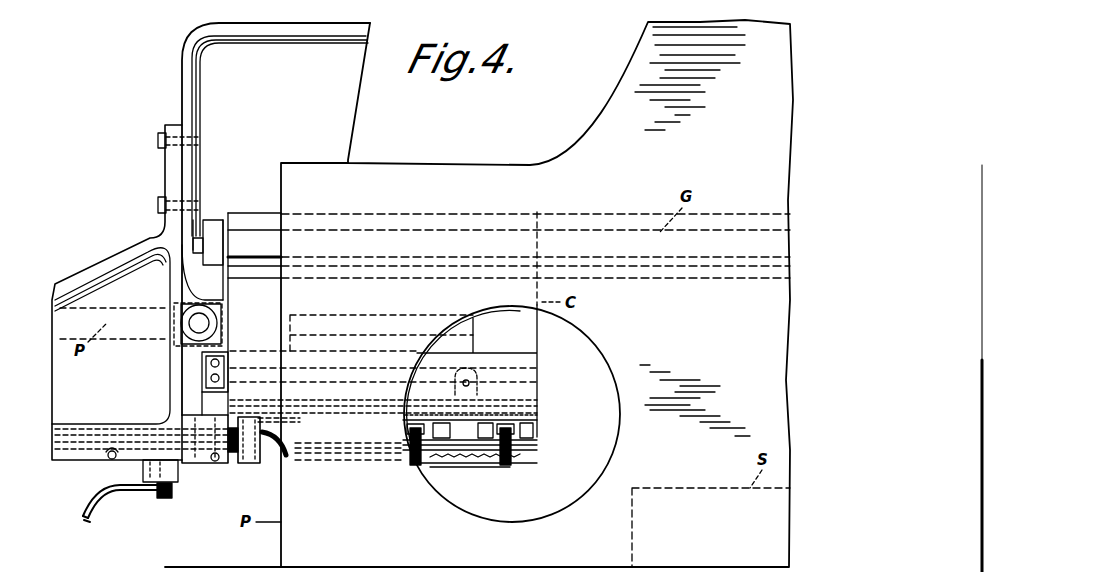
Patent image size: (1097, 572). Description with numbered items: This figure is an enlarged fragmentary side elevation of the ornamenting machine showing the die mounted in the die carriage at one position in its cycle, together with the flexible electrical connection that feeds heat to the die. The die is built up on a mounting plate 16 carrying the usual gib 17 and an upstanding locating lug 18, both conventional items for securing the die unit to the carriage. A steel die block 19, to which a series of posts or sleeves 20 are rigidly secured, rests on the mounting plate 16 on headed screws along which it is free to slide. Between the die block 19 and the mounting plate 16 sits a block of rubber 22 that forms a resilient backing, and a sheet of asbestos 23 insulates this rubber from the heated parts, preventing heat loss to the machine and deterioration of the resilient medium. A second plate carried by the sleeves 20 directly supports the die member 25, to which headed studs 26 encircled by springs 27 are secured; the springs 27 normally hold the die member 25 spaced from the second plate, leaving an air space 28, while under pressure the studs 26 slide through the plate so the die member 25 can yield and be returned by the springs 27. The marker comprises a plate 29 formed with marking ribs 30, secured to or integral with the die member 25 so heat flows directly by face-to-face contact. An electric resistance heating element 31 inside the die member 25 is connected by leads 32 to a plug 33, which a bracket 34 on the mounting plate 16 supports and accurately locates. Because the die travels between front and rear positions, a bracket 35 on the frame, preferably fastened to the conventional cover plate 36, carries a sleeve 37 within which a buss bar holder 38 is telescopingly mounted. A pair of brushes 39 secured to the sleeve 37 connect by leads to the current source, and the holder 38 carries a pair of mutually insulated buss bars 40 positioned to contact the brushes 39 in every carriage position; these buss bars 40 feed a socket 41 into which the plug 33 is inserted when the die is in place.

The mounting plate 16 is at (332, 398).
The gib 17 is at (353, 406).
The locating lug 18 is at (472, 378).
The die block 19 is at (540, 421).
The sleeves 20 is at (540, 440).
The block of rubber 22 is at (532, 424).
The sheet of asbestos 23 is at (525, 446).
The die member 25 is at (516, 456).
The headed studs 26 is at (505, 428).
The springs 27 is at (519, 464).
The air space 28 is at (522, 451).
The plate 29 is at (470, 458).
The marking ribs 30 is at (478, 464).
The electric resistance heating element 31 is at (425, 462).
The leads 32 is at (286, 447).
The plug 33 is at (248, 465).
The bracket 34 is at (262, 419).
The bracket 35 is at (100, 262).
The cover plate 36 is at (182, 75).
The sleeve 37 is at (72, 424).
The buss bar holder 38 is at (106, 428).
The brushes 39 is at (145, 448).
The buss bars 40 is at (92, 437).
The socket 41 is at (213, 462).